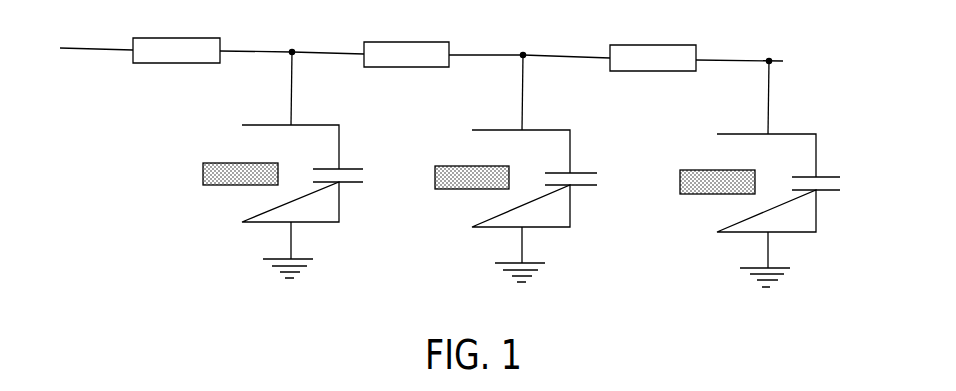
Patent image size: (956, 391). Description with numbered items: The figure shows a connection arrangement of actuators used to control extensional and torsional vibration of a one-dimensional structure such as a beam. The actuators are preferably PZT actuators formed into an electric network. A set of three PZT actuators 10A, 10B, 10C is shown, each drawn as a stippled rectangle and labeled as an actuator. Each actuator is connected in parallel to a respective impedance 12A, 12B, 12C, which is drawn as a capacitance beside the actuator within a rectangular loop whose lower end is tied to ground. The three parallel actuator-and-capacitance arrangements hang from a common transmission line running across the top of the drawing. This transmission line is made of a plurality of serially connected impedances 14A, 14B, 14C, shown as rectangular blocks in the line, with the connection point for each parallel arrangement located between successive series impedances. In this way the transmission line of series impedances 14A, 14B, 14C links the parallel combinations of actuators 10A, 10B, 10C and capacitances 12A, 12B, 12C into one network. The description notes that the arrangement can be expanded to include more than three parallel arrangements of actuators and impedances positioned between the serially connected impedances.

The impedance 14A is at (195, 38).
The impedance 14B is at (395, 30).
The impedance 14C is at (677, 45).
The PZT actuator 10A is at (207, 200).
The PZT actuator 10B is at (463, 166).
The PZT actuator 10C is at (710, 170).
The impedance 12A is at (350, 165).
The impedance 12B is at (583, 168).
The impedance 12C is at (827, 175).